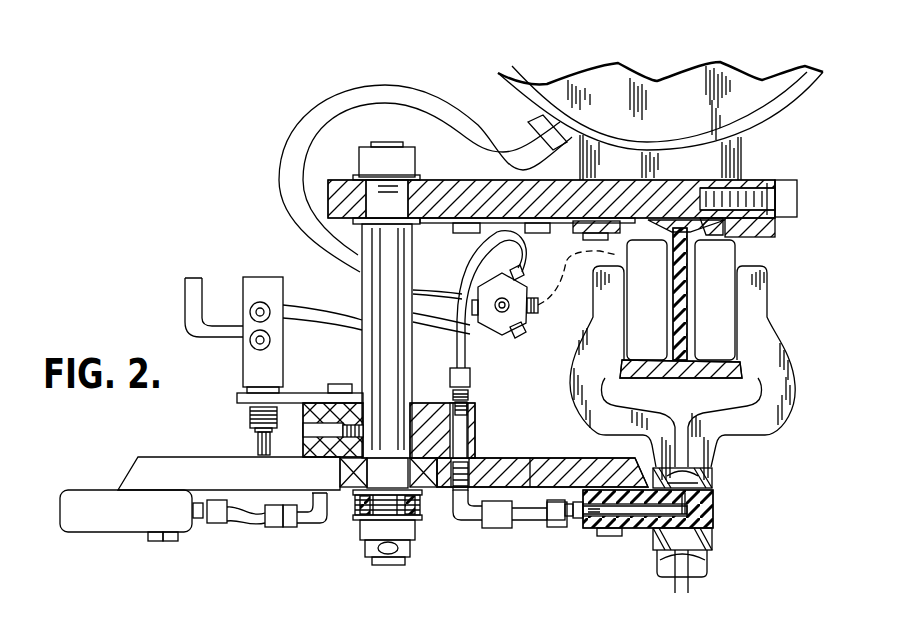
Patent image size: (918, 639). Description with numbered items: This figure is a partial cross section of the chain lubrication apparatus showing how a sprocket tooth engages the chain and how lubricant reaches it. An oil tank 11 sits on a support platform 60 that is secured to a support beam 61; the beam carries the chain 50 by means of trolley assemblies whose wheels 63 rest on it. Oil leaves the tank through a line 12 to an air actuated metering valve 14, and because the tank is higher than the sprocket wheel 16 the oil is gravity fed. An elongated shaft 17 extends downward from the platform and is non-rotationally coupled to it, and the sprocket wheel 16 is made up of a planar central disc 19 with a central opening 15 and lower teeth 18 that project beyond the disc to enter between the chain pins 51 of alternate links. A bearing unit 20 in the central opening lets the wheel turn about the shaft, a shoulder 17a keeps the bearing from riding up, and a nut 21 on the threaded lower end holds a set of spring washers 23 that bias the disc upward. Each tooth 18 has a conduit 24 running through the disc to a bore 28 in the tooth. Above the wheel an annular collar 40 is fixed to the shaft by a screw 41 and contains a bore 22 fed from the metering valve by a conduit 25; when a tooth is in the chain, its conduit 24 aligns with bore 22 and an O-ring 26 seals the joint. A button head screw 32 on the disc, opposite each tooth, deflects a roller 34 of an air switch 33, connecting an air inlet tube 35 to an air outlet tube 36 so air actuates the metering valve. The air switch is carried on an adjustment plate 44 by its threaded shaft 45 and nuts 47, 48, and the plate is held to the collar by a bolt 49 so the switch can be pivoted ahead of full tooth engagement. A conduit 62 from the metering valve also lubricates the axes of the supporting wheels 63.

The oil tank 11 is at (800, 92).
The line 12 is at (376, 88).
The metering valve 14 is at (502, 336).
The central opening 15 is at (417, 390).
The sprocket wheel 16 is at (541, 457).
The shaft 17 is at (402, 268).
The shoulder 17a is at (387, 459).
The tooth 18 is at (122, 520).
The disc 19 is at (572, 460).
The bearing unit 20 is at (350, 491).
The nut 21 is at (417, 530).
The bore 22 is at (463, 428).
The spring washers 23 is at (362, 521).
The conduit 24 is at (462, 521).
The conduit 25 is at (468, 282).
The O-ring 26 is at (470, 450).
The bore 28 is at (633, 528).
The button head screw 32 is at (248, 458).
The air switch 33 is at (266, 276).
The roller 34 is at (258, 440).
The air inlet tube 35 is at (204, 276).
The air outlet tube 36 is at (305, 312).
The collar 40 is at (302, 412).
The screw 41 is at (342, 428).
The adjustment plate 44 is at (292, 392).
The threaded shaft 45 is at (253, 426).
The nut 47 is at (243, 386).
The nut 48 is at (248, 408).
The bolt 49 is at (338, 383).
The chain 50 is at (728, 542).
The chain pins 51 is at (712, 562).
The support platform 60 is at (445, 182).
The support beam 61 is at (662, 378).
The conduit 62 is at (548, 306).
The wheels 63 is at (654, 295).